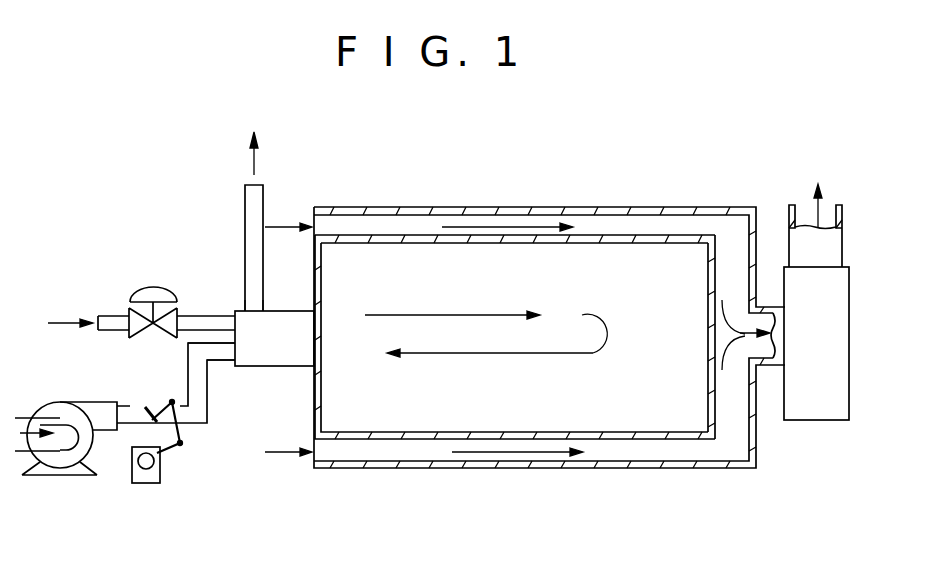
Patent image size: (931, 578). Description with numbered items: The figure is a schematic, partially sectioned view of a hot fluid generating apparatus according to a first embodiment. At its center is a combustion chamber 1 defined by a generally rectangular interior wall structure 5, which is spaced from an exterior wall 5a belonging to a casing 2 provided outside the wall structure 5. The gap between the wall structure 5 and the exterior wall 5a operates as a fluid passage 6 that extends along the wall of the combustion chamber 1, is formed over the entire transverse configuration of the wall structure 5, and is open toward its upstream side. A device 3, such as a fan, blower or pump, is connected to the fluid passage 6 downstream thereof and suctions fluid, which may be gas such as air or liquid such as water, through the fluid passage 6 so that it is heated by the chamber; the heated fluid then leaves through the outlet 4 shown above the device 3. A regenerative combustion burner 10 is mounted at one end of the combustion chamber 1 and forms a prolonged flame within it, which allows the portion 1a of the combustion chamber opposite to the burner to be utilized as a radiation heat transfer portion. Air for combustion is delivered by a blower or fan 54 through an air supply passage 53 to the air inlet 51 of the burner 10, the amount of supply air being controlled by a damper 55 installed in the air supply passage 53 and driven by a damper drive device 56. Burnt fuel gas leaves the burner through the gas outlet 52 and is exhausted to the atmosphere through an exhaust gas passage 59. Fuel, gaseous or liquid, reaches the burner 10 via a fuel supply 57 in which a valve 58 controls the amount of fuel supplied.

The combustion chamber 1 is at (599, 273).
The portion of the combustion chamber opposite to the burner 1a is at (708, 278).
The casing 2 is at (483, 207).
The device for causing fluid to flow 3 is at (820, 421).
The exhaust outlet 4 is at (792, 220).
The interior wall structure 5 is at (613, 440).
The exterior wall 5a is at (407, 468).
The fluid passage 6 is at (428, 222).
The regenerative combustion burner 10 is at (283, 310).
The air inlet 51 is at (230, 356).
The gas outlet 52 is at (251, 304).
The air supply passage 53 is at (208, 406).
The blower or fan 54 is at (58, 458).
The damper 55 is at (133, 403).
The damper drive device 56 is at (148, 483).
The fuel supply 57 is at (112, 316).
The valve 58 is at (155, 287).
The exhaust gas passage 59 is at (245, 226).